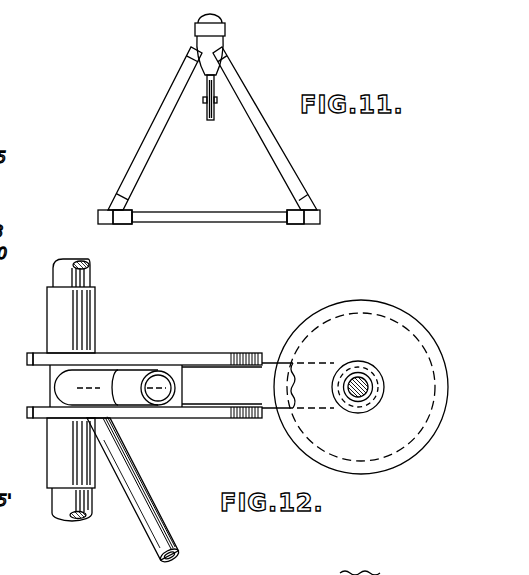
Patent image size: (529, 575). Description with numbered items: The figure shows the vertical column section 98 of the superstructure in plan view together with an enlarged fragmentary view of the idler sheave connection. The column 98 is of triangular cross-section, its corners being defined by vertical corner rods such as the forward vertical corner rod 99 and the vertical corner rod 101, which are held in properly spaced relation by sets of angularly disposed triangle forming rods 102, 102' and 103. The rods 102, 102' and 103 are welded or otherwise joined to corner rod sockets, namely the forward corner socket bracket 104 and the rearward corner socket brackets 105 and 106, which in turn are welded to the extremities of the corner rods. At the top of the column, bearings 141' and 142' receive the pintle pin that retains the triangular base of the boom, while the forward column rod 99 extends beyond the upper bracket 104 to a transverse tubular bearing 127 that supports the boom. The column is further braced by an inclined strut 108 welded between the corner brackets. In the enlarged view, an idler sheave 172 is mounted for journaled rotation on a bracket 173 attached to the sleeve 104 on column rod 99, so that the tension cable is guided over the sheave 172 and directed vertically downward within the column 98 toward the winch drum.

In FIG. 11, the transverse tubular bearing 127 is at (218, 29).
In FIG. 11, the forward corner socket bracket 104 is at (224, 48).
In FIG. 12, the forward corner socket bracket 104 is at (55, 472).
In FIG. 11, the bracket 173 is at (213, 67).
In FIG. 12, the bracket 173 is at (212, 355).
In FIG. 11, the idler sheave 172 is at (210, 120).
In FIG. 12, the idler sheave 172 is at (322, 337).
In FIG. 11, the triangle forming rod 102' is at (149, 128).
In FIG. 12, the triangle forming rod 102' is at (115, 363).
In FIG. 11, the triangle forming rod 102 is at (277, 128).
In FIG. 11, the vertical column section 98 is at (298, 169).
In FIG. 11, the triangle forming rod 103 is at (245, 221).
In FIG. 11, the top extremity bearing 142' is at (92, 216).
In FIG. 11, the rearward corner socket bracket 106 is at (122, 224).
In FIG. 11, the top extremity bearing 141' is at (332, 217).
In FIG. 11, the rearward corner socket bracket 105 is at (296, 225).
In FIG. 12, the forward vertical corner rod 99 is at (57, 277).
In FIG. 12, the inclined strut 108 is at (148, 505).
In FIG. 12, the vertical corner rod 101 is at (384, 574).